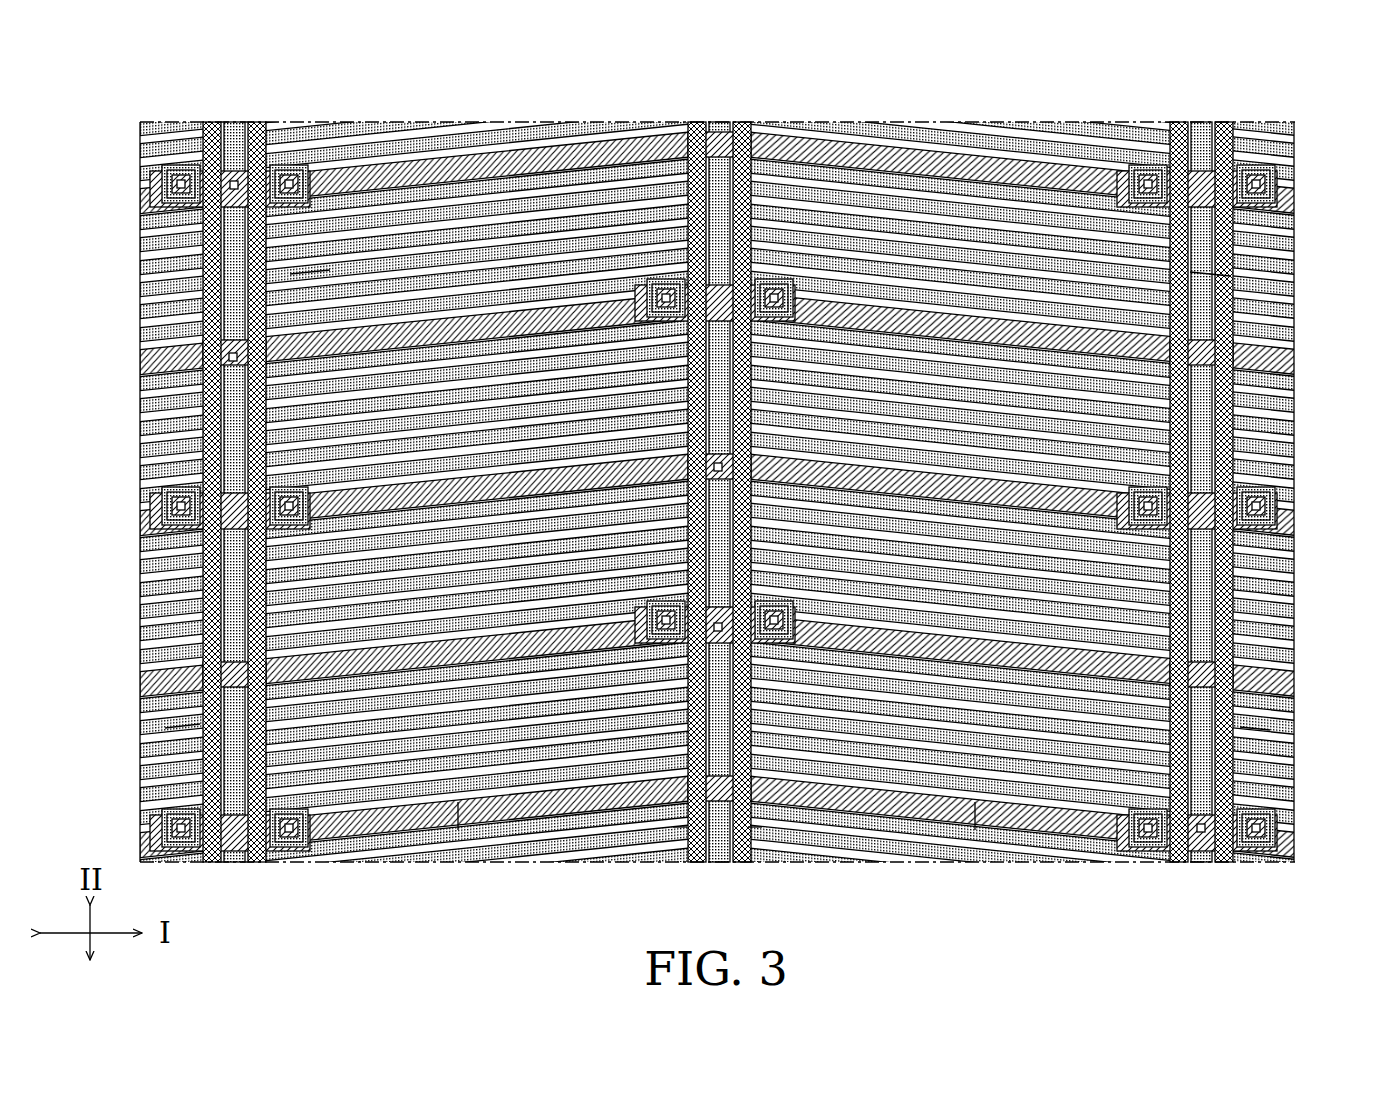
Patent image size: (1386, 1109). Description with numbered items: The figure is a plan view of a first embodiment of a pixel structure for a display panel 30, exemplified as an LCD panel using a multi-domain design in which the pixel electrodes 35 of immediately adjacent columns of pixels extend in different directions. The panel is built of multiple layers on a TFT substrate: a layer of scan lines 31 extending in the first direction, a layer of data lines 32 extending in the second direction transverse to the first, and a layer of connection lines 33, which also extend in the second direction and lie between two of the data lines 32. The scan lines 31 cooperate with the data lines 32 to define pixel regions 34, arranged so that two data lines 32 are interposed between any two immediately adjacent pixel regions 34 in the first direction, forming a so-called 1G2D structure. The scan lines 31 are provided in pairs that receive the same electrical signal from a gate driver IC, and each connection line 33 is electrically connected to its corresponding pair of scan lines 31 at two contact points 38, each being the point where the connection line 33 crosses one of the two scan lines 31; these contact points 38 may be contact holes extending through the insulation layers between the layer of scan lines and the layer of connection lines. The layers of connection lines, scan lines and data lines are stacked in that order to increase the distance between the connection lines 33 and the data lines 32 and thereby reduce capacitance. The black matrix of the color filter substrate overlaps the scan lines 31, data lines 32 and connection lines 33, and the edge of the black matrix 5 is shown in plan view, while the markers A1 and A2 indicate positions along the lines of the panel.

The display panel 30 is at (1300, 121).
The scan lines 31 is at (270, 234).
The data lines 32 is at (212, 122).
The connection lines 33 is at (235, 122).
The pixel regions 34 is at (290, 274).
The pixel electrodes 35 is at (165, 728).
The contact points 38 is at (230, 186).
The edge of a black matrix 5 is at (458, 802).
The cross-section line A1 is at (673, 827).
The cross-section line A2 is at (762, 827).